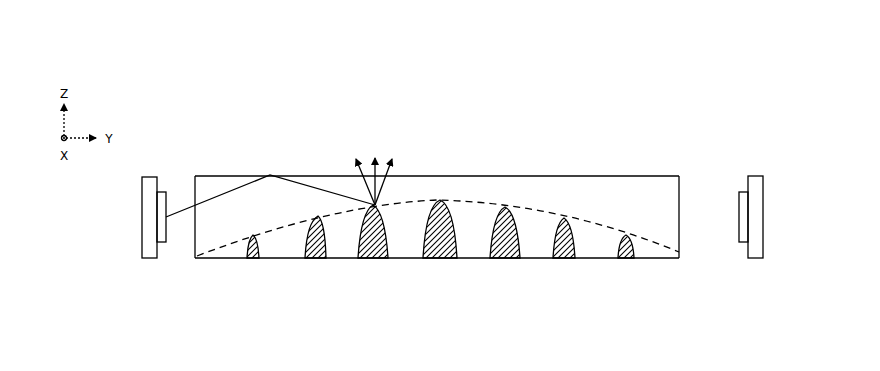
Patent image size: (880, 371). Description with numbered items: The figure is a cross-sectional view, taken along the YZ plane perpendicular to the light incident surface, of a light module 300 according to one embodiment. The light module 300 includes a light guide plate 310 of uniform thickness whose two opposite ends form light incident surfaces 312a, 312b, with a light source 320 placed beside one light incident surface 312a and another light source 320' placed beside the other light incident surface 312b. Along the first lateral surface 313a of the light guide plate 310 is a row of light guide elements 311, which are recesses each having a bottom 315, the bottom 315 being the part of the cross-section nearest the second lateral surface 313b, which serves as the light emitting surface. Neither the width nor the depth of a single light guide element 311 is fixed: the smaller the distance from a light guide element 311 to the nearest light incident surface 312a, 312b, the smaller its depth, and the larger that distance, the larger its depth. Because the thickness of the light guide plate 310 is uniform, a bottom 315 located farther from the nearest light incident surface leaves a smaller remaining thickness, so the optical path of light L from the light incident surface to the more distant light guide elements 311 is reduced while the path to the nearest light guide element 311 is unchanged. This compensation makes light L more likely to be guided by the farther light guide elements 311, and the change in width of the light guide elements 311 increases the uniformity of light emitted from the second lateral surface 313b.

The light module 300 is at (142, 177).
The light source 320 is at (148, 198).
The light source 320' is at (752, 197).
The light guide plate 310 is at (195, 244).
The light incident surface 312a is at (196, 187).
The light incident surface 312b is at (680, 251).
The first lateral surface 313a is at (524, 258).
The second lateral surface 313b is at (548, 176).
The light guide element 311 is at (316, 258).
The bottom 315 is at (312, 214).
The light L is at (279, 176).